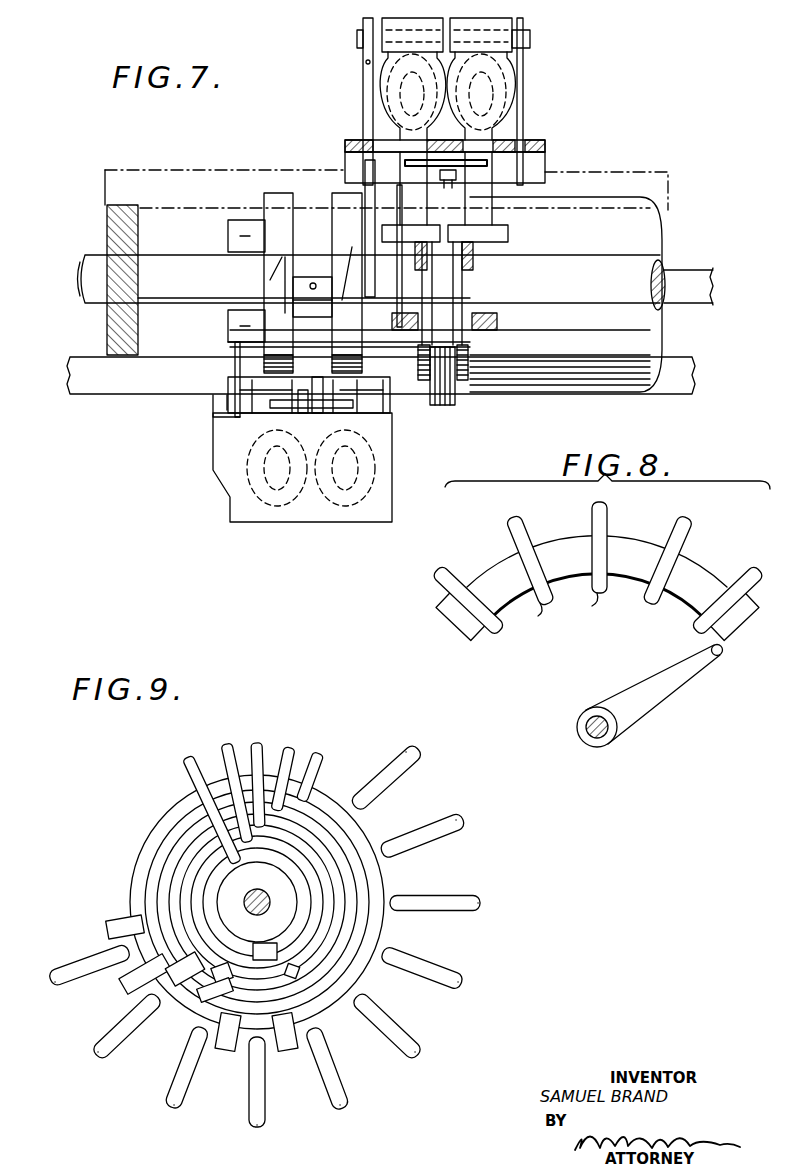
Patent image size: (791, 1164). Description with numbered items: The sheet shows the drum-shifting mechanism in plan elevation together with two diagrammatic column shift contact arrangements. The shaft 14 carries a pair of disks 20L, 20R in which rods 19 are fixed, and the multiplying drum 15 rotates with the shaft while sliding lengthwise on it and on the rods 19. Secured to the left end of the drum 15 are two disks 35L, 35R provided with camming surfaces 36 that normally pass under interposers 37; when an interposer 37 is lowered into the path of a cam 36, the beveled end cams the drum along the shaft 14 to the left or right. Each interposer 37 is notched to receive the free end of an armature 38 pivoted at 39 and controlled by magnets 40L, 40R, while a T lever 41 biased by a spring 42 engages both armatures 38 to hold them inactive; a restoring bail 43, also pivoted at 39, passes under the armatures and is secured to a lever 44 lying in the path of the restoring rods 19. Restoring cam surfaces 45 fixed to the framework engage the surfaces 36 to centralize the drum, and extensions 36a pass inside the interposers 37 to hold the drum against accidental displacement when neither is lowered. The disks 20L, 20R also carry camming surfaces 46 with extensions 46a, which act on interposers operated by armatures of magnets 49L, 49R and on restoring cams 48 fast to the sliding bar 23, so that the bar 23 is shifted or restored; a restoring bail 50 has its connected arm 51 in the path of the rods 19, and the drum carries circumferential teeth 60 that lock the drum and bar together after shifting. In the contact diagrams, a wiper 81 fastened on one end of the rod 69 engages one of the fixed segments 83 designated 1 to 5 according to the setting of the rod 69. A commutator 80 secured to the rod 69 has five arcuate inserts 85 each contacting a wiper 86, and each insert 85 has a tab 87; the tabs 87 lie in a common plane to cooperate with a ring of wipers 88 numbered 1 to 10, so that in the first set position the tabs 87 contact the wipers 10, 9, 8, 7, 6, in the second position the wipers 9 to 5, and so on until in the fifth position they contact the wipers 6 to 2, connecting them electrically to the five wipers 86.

In FIG. 7, the pivot 39 is at (523, 32).
In FIG. 7, the right magnet 40R is at (384, 98).
In FIG. 7, the left magnet 40L is at (512, 100).
In FIG. 7, the restoring bail 43 is at (363, 122).
In FIG. 7, the T lever 41 is at (470, 162).
In FIG. 7, the spring 42 is at (457, 176).
In FIG. 7, the left disk 20L is at (278, 193).
In FIG. 7, the right disk 20R is at (340, 205).
In FIG. 7, the lever 44 is at (368, 185).
In FIG. 7, the rods 19 is at (245, 232).
In FIG. 7, the shaft 14 is at (88, 300).
In FIG. 7, the camming surfaces 46 is at (272, 262).
In FIG. 7, the extensions 46a is at (332, 292).
In FIG. 7, the armature 38 is at (482, 238).
In FIG. 7, the interposers 37 is at (422, 258).
In FIG. 7, the extensions 36a is at (432, 276).
In FIG. 7, the camming surfaces 36 is at (456, 298).
In FIG. 7, the restoring cam surfaces 45 is at (488, 322).
In FIG. 7, the multiplying drum 15 is at (635, 230).
In FIG. 7, the sliding bar 23 is at (690, 275).
In FIG. 7, the connected arm 51 is at (235, 362).
In FIG. 7, the restoring bail 50 is at (222, 405).
In FIG. 7, the restoring cams 48 is at (272, 396).
In FIG. 7, the left magnet 49L is at (248, 470).
In FIG. 7, the right magnet 49R is at (352, 505).
In FIG. 7, the right disk 35R is at (428, 380).
In FIG. 7, the left disk 35L is at (460, 395).
In FIG. 7, the circumferential teeth 60 is at (446, 406).
In FIG. 8, the segment and wiper designation 1 is at (727, 594).
In FIG. 9, the segment and wiper designation 1 is at (415, 745).
In FIG. 8, the segment and wiper designation 2 is at (668, 552).
In FIG. 9, the segment and wiper designation 2 is at (467, 815).
In FIG. 8, the segment and wiper designation 3 is at (599, 539).
In FIG. 9, the segment and wiper designation 3 is at (485, 904).
In FIG. 8, the segment and wiper designation 4 is at (529, 552).
In FIG. 9, the segment and wiper designation 4 is at (466, 987).
In FIG. 8, the segment and wiper designation 5 is at (464, 597).
In FIG. 9, the segment and wiper designation 5 is at (421, 1060).
In FIG. 9, the wiper designation 6 is at (344, 1115).
In FIG. 9, the wiper designation 7 is at (256, 1135).
In FIG. 9, the wiper designation 8 is at (167, 1117).
In FIG. 9, the wiper designation 9 is at (89, 1063).
In FIG. 9, the wiper designation 10 is at (41, 989).
In FIG. 8, the fixed segments 83 is at (597, 596).
In FIG. 8, the wiper 81 is at (688, 680).
In FIG. 8, the rod 69 is at (604, 737).
In FIG. 9, the commutator 80 is at (305, 787).
In FIG. 9, the arcuate inserts 85 is at (150, 863).
In FIG. 9, the wipers 86 is at (318, 758).
In FIG. 9, the tabs 87 is at (110, 935).
In FIG. 9, the ring of wipers 88 is at (392, 773).